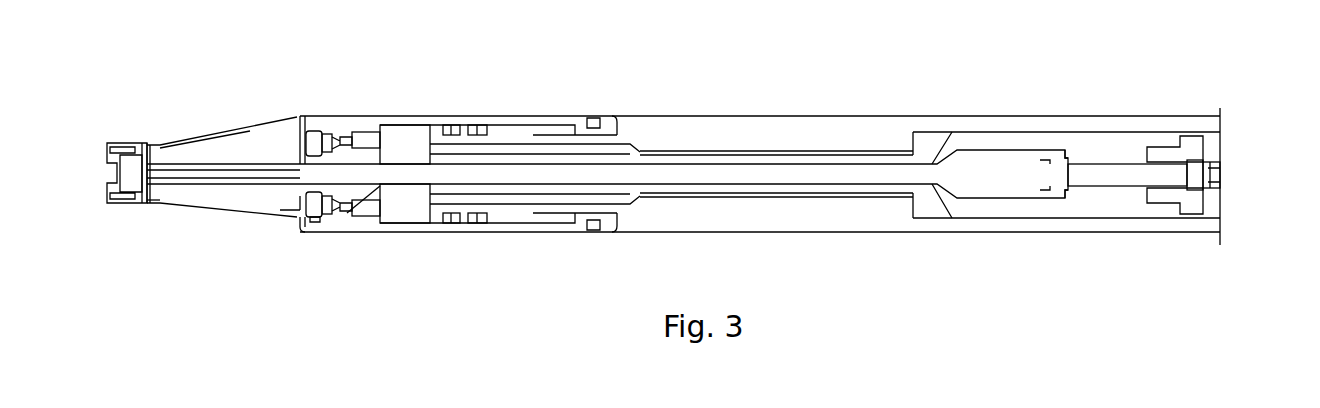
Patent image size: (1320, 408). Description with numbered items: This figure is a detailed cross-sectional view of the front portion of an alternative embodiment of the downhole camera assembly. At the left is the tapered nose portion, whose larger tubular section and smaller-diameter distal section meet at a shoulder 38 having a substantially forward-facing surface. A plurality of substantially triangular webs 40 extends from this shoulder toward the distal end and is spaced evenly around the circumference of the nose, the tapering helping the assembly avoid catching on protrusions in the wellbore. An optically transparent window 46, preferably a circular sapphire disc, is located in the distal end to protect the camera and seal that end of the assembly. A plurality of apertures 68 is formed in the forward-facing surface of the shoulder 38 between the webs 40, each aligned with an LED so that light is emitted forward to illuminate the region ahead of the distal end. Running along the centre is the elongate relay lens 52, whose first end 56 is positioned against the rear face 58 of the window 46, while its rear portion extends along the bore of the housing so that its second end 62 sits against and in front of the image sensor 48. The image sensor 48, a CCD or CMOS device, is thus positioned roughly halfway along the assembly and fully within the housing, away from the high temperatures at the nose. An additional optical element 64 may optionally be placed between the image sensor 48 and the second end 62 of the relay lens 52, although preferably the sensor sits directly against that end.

The shoulder 38 is at (282, 210).
The triangular webs 40 is at (231, 131).
The window 46 is at (108, 143).
The image sensor 48 is at (1212, 170).
The relay lens 52 is at (693, 175).
The first end of the relay lens 56 is at (147, 146).
The rear face of the window 58 is at (158, 200).
The second end of the relay lens 62 is at (1064, 182).
The additional optical element 64 is at (1117, 177).
The apertures 68 is at (293, 122).